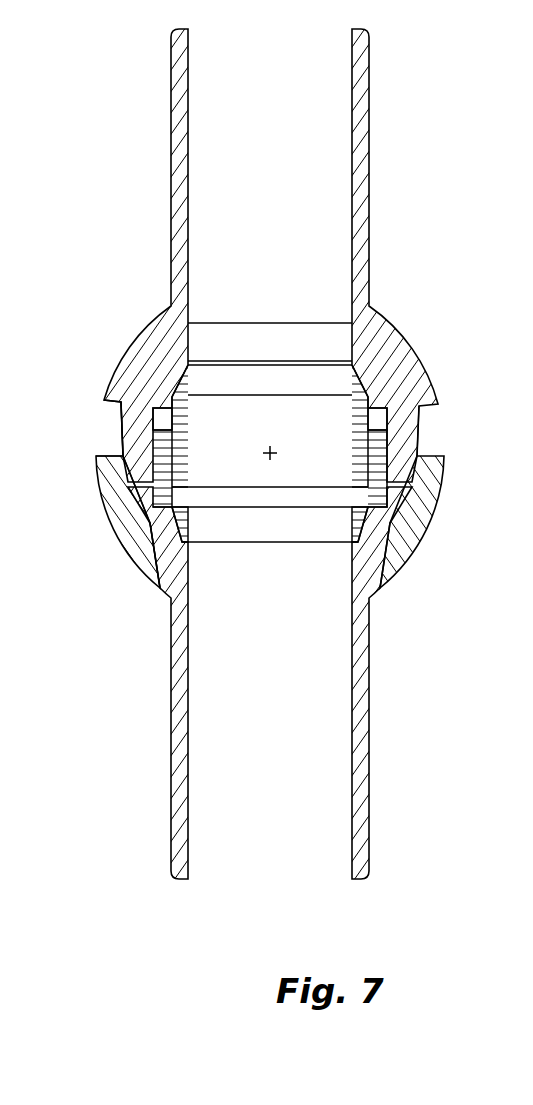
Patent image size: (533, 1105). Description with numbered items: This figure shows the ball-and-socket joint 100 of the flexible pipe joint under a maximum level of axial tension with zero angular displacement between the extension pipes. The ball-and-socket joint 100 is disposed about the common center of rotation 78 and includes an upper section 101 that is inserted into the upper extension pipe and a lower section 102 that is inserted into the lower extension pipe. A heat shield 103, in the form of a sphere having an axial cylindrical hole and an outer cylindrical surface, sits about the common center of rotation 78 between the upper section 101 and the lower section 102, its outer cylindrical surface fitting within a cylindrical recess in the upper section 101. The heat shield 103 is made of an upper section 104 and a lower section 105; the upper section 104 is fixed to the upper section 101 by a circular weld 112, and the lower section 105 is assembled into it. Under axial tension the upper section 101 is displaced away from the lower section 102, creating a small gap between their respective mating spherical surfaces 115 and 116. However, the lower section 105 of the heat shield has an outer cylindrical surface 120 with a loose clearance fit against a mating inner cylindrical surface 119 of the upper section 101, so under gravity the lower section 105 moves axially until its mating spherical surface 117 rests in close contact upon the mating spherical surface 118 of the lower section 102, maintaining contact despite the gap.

The ball-and-socket joint 100 is at (266, 460).
The upper section of the ball-and-socket joint 101 is at (188, 313).
The lower section of the ball-and-socket joint 102 is at (182, 574).
The heat shield 103 is at (270, 436).
The upper section of the heat shield 104 is at (187, 427).
The lower section of the heat shield 105 is at (182, 521).
The circular weld 112 is at (183, 362).
The common center of rotation 78 is at (273, 451).
The mating spherical surface of the upper section 115 is at (119, 433).
The mating spherical surface of the lower section 116 is at (140, 522).
The mating spherical surface 117 is at (160, 514).
The mating spherical surface 118 is at (165, 528).
The inner cylindrical surface 119 is at (119, 400).
The outer cylindrical surface 120 is at (142, 497).